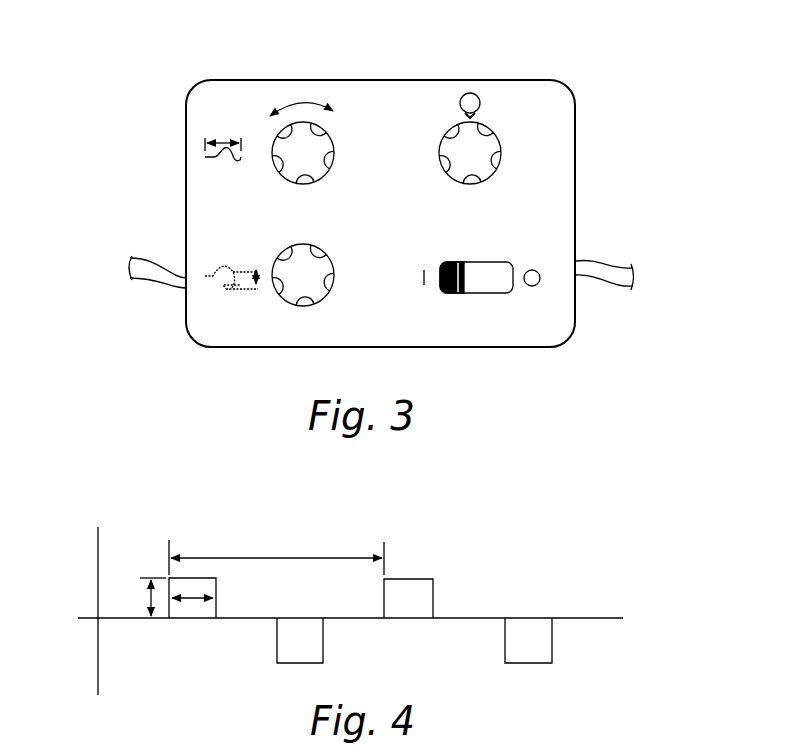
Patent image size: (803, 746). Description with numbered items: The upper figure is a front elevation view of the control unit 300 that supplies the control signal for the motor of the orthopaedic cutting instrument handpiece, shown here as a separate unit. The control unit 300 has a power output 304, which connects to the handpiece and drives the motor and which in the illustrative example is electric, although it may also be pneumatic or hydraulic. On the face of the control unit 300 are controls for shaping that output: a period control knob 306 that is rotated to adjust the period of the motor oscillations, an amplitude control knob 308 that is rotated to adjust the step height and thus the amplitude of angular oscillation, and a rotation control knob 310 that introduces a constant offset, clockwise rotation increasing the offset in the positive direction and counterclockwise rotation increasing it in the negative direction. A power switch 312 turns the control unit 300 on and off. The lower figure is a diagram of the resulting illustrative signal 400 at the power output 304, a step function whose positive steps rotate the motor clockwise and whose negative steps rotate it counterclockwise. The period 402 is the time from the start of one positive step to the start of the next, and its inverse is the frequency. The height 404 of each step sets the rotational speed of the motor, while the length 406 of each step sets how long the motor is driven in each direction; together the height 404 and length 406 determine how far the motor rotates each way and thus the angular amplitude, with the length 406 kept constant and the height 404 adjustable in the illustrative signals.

In FIG. 3, the control unit 300 is at (493, 80).
In FIG. 3, the power output 304 is at (145, 275).
In FIG. 3, the period control knob 306 is at (273, 143).
In FIG. 3, the amplitude control knob 308 is at (290, 305).
In FIG. 3, the rotation control knob 310 is at (500, 167).
In FIG. 3, the power switch 312 is at (485, 281).
In FIG. 4, the signal 400 is at (528, 546).
In FIG. 4, the period 402 is at (278, 557).
In FIG. 4, the height 404 is at (137, 610).
In FIG. 4, the length 406 is at (190, 600).